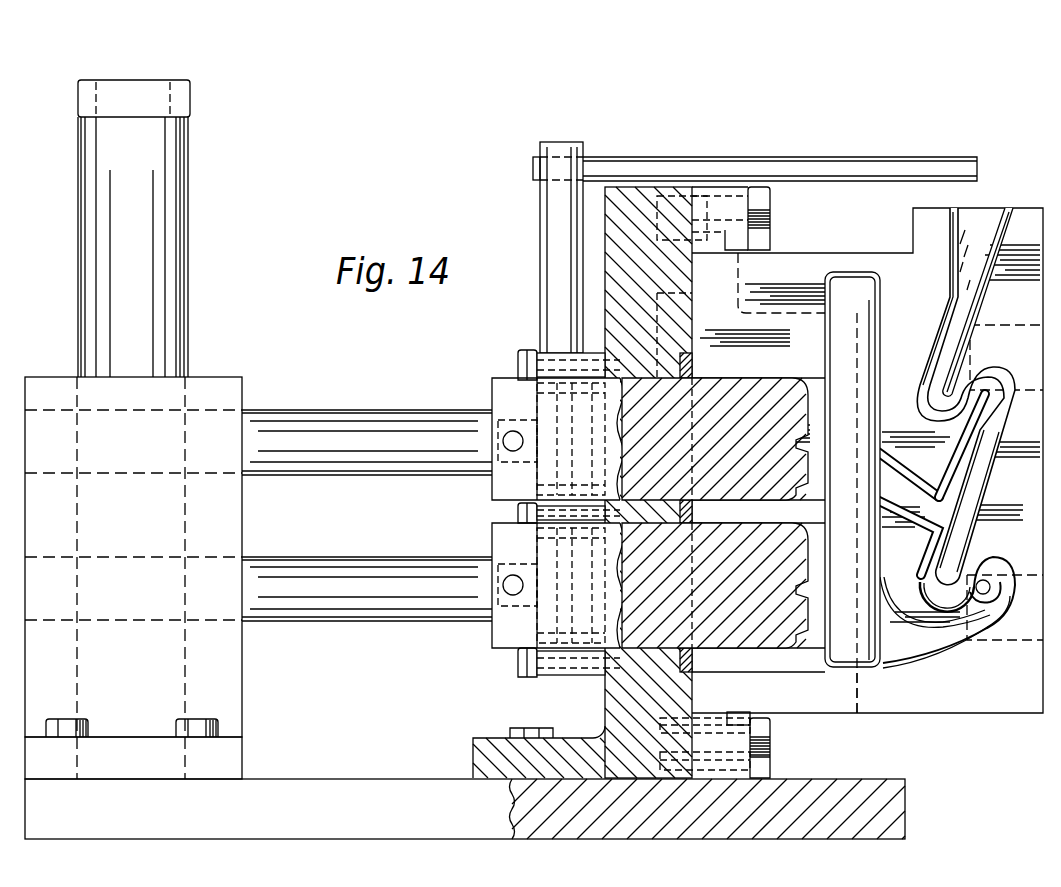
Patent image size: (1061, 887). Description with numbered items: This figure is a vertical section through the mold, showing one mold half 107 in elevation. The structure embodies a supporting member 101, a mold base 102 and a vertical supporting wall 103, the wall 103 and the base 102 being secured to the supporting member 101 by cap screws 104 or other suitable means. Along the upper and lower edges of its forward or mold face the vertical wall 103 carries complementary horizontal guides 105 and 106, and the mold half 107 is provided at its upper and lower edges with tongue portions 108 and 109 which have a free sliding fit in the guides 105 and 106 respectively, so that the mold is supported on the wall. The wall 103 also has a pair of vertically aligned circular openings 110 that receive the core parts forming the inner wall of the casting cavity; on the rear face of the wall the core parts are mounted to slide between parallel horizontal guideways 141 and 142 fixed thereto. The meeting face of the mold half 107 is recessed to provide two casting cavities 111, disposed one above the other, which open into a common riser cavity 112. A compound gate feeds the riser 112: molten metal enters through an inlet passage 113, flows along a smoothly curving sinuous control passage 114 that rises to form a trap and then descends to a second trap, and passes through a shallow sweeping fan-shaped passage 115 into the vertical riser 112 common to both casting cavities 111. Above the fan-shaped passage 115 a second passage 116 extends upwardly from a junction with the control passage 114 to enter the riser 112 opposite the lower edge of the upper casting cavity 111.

The supporting member 101 is at (326, 800).
The mold base 102 is at (483, 762).
The vertical supporting wall 103 is at (640, 205).
The cap screws 104 is at (520, 728).
The horizontal guide 105 is at (735, 208).
The horizontal guide 106 is at (762, 748).
The mold half 107 is at (805, 265).
The tongue portion 108 is at (713, 243).
The tongue portion 109 is at (712, 722).
The circular openings 110 is at (537, 395).
The casting cavities 111 is at (795, 385).
The riser cavity 112 is at (848, 414).
The inlet passage 113 is at (985, 215).
The sinuous control passage 114 is at (996, 437).
The fan-shaped passage 115 is at (935, 648).
The second passage 116 is at (903, 492).
The horizontal guideway 141 is at (563, 372).
The horizontal guideway 142 is at (518, 513).